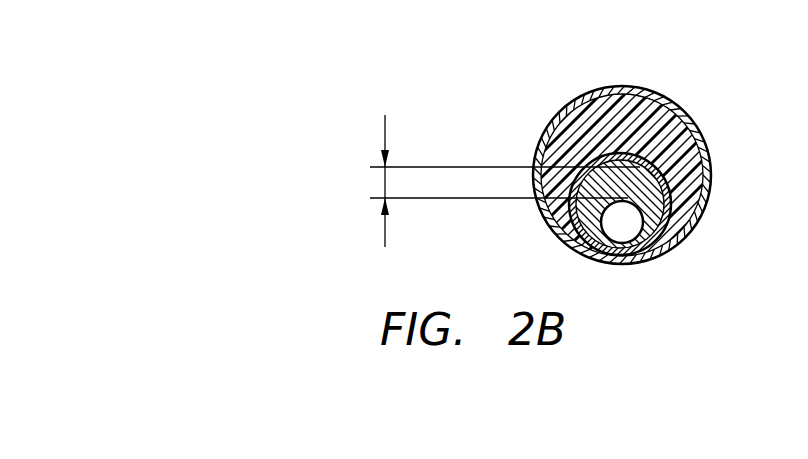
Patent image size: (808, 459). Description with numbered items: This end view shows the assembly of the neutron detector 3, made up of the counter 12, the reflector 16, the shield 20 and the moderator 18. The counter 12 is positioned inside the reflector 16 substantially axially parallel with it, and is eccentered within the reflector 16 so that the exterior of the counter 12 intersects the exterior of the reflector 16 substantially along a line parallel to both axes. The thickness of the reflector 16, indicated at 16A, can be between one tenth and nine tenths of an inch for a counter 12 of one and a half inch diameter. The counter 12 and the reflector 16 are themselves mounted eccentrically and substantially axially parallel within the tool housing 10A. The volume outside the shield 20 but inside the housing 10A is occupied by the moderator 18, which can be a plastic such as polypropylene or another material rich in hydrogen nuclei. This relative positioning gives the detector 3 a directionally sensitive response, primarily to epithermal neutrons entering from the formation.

The detector 3 is at (624, 50).
The moderator 18 is at (652, 103).
The tool housing 10A is at (682, 110).
The counter 12 is at (665, 180).
The reflector 16 is at (668, 204).
The shield 20 is at (577, 212).
The thickness of the reflector 16A is at (385, 183).